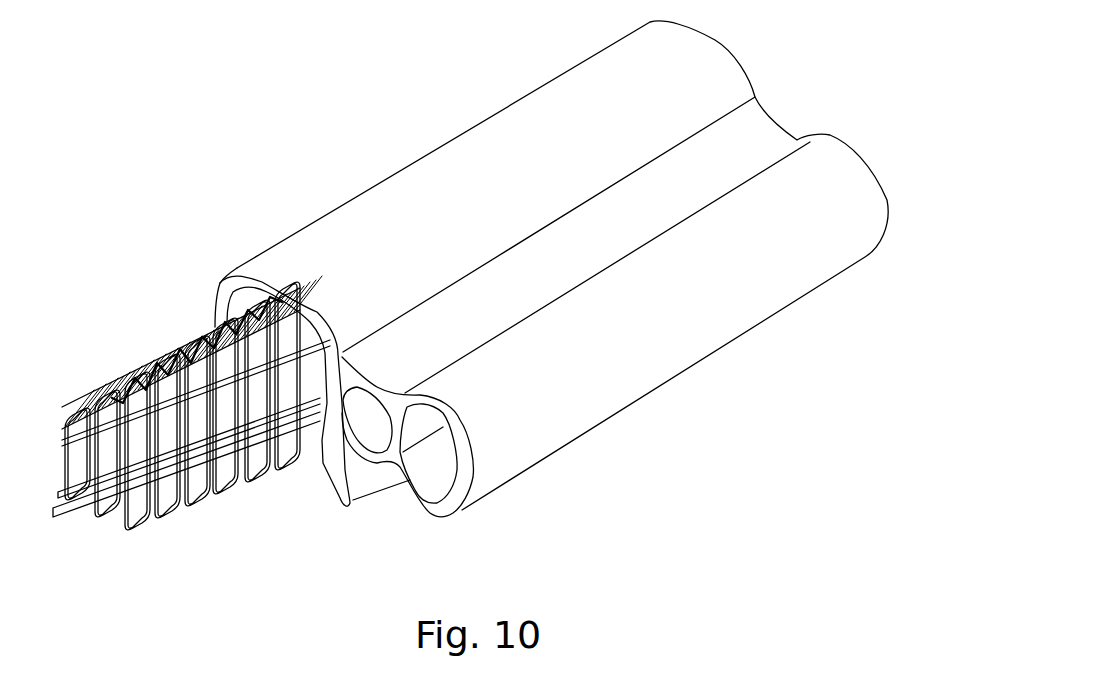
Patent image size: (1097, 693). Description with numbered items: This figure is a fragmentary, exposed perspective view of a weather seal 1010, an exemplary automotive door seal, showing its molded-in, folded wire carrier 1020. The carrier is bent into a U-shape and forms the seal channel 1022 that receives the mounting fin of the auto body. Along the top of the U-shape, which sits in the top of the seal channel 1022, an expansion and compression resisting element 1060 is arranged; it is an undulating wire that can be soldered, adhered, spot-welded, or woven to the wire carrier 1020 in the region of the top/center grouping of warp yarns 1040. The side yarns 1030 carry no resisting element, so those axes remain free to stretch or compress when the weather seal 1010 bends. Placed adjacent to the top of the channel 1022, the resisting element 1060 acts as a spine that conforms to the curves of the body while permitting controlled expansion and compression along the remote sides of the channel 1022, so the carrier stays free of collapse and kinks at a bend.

The weather seal 1010 is at (551, 299).
The wire carrier 1020 is at (155, 358).
The seal channel 1022 is at (295, 402).
The side yarns 1030 is at (80, 487).
The warp yarns 1040 is at (80, 433).
The expansion and compression resisting element 1060 is at (103, 392).